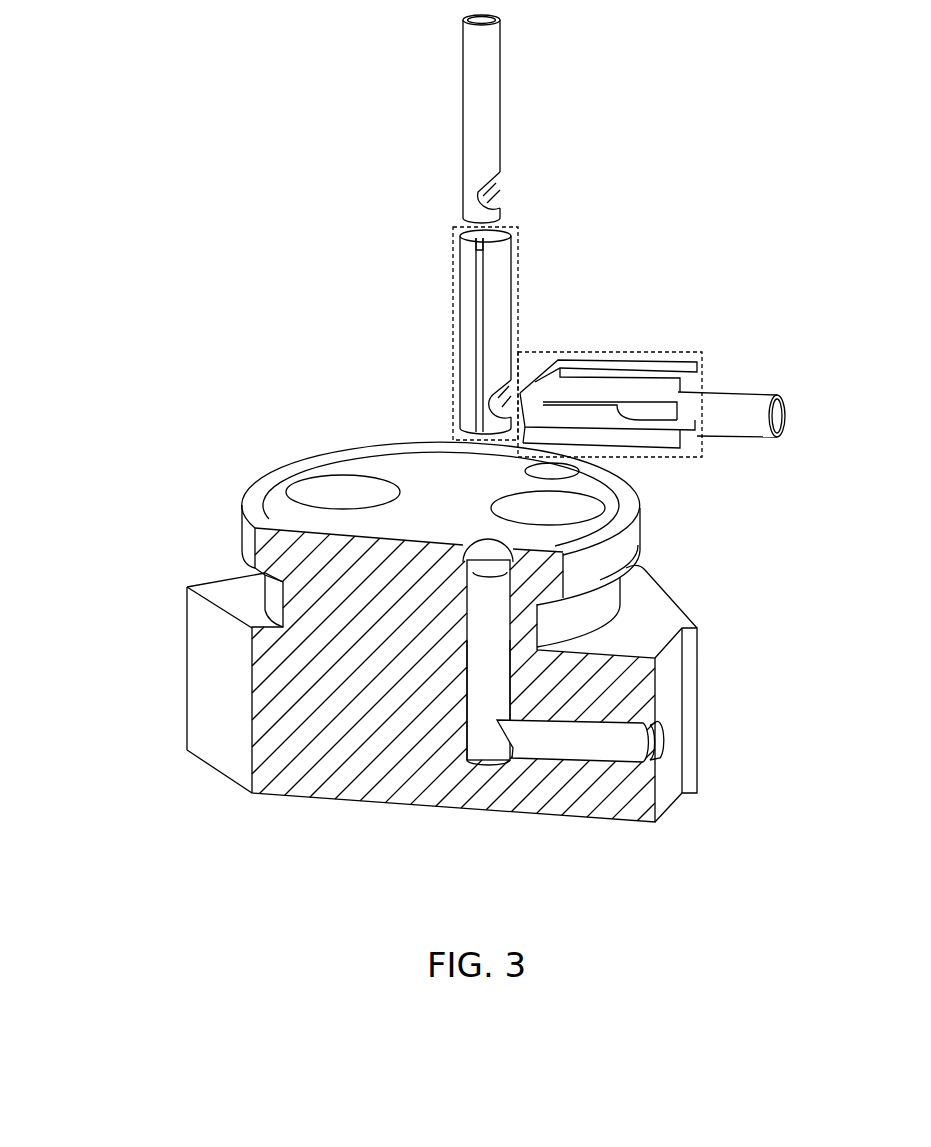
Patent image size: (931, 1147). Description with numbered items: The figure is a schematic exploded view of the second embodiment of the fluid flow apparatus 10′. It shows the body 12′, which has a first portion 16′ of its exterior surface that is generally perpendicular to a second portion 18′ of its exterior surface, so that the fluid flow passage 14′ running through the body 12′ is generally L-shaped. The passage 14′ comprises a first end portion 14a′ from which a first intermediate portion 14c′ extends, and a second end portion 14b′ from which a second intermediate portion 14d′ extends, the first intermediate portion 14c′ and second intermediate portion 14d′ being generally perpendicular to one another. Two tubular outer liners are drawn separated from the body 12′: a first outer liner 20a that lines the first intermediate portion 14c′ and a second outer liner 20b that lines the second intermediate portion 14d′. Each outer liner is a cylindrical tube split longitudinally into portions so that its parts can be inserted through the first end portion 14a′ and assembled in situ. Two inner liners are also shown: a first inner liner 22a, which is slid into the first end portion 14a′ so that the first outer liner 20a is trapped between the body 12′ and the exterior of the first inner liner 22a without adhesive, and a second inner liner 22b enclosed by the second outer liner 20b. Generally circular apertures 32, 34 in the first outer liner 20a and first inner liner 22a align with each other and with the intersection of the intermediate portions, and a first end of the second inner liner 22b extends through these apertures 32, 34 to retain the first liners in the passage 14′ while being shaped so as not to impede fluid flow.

The fluid flow apparatus 10′ is at (150, 653).
The body 12′ is at (335, 680).
The fluid flow passage 14′ is at (462, 604).
The first end portion of the passage 14a′ is at (490, 562).
The second end portion of the passage 14b′ is at (693, 743).
The first intermediate portion of the passage 14c′ is at (482, 640).
The second intermediate portion of the passage 14d′ is at (550, 737).
The first portion of the exterior surface of the body 16′ is at (410, 483).
The second portion of the exterior surface of the body 18′ is at (672, 677).
The first outer liner 20a is at (445, 296).
The second outer liner 20b is at (683, 348).
The first inner liner 22a is at (483, 66).
The second inner liner 22b is at (740, 393).
The circular aperture in the first outer liner 32 is at (518, 393).
The circular aperture in the first inner liner 34 is at (500, 182).